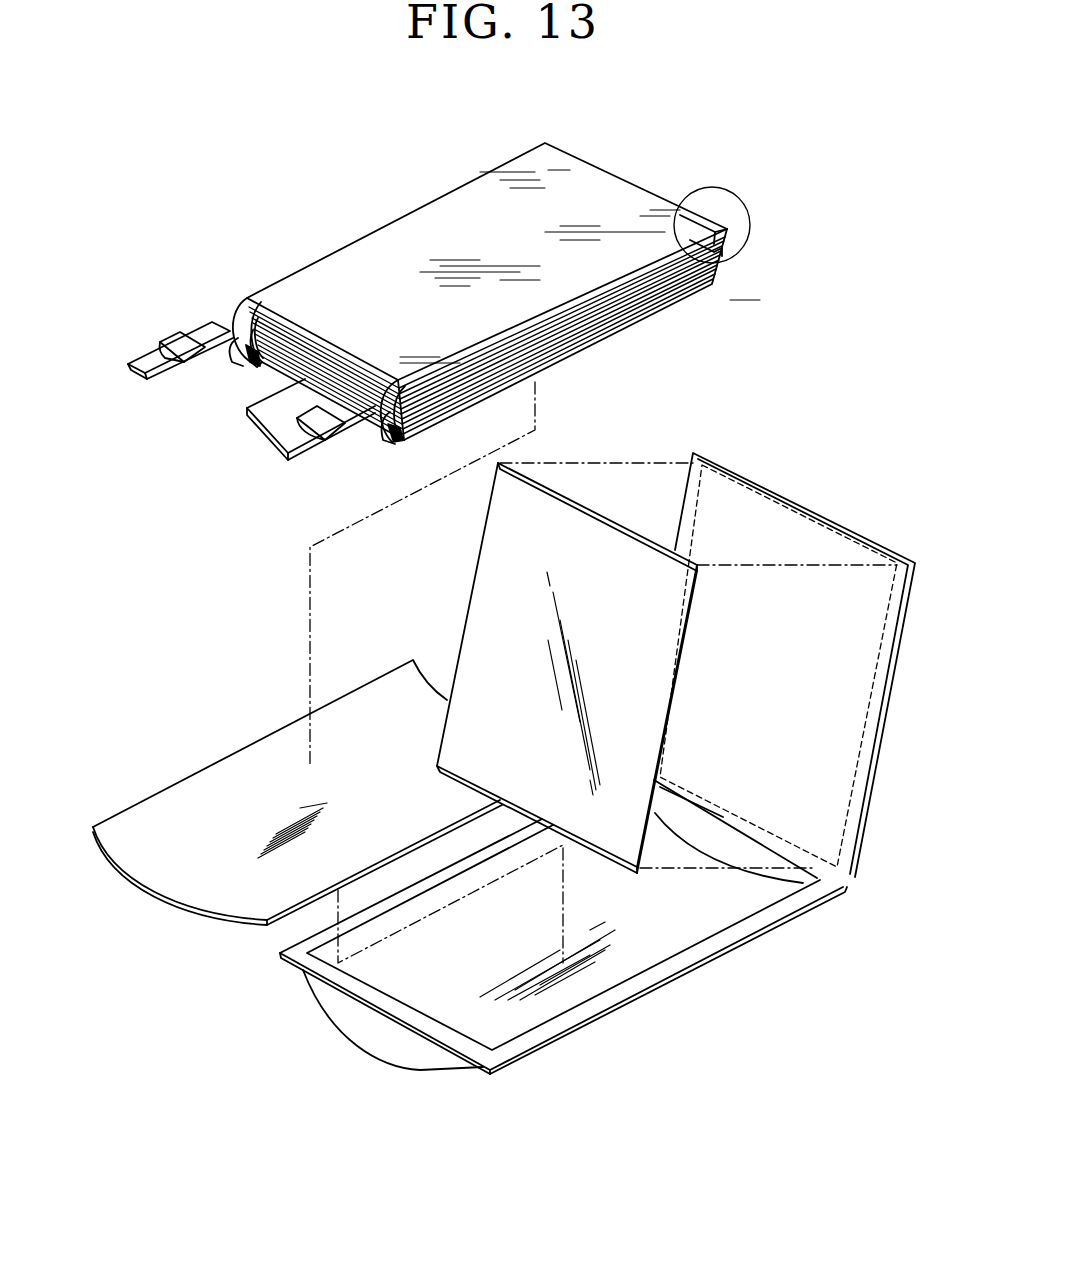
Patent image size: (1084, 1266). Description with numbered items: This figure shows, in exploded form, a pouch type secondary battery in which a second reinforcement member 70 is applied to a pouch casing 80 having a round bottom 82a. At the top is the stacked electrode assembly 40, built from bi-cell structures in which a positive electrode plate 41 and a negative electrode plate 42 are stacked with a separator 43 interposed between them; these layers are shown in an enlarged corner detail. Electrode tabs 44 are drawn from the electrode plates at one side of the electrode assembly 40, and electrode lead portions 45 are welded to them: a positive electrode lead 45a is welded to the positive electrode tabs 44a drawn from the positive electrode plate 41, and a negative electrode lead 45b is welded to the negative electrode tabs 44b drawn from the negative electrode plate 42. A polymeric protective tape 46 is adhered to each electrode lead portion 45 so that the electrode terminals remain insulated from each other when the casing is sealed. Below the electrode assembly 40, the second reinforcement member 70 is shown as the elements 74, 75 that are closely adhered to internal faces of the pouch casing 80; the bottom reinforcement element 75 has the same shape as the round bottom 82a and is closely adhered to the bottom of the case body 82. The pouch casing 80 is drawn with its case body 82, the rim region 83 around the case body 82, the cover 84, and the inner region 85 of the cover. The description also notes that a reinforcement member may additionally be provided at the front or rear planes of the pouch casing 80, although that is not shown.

The electrode assembly 40 is at (618, 176).
The positive electrode plate 41 is at (727, 228).
The negative electrode plate 42 is at (740, 254).
The separator 43 is at (735, 233).
The electrode tabs 44 is at (248, 205).
The positive electrode tabs 44a is at (243, 317).
The negative electrode tabs 44b is at (262, 318).
The electrode lead portions 45 is at (213, 498).
The positive electrode lead 45a is at (138, 378).
The negative electrode lead 45b is at (277, 449).
The polymeric protective tape 46 is at (173, 343).
The second reinforcement member 70 is at (406, 563).
The upper inner plate 74 is at (480, 587).
The bottom reinforcement element 75 is at (365, 698).
The pouch casing 80 is at (880, 911).
The case body 82 is at (576, 946).
The round bottom 82a is at (387, 1043).
The flange 83 is at (604, 996).
The upper case (cover) 84 is at (853, 820).
The adhesive layer 85 is at (820, 527).